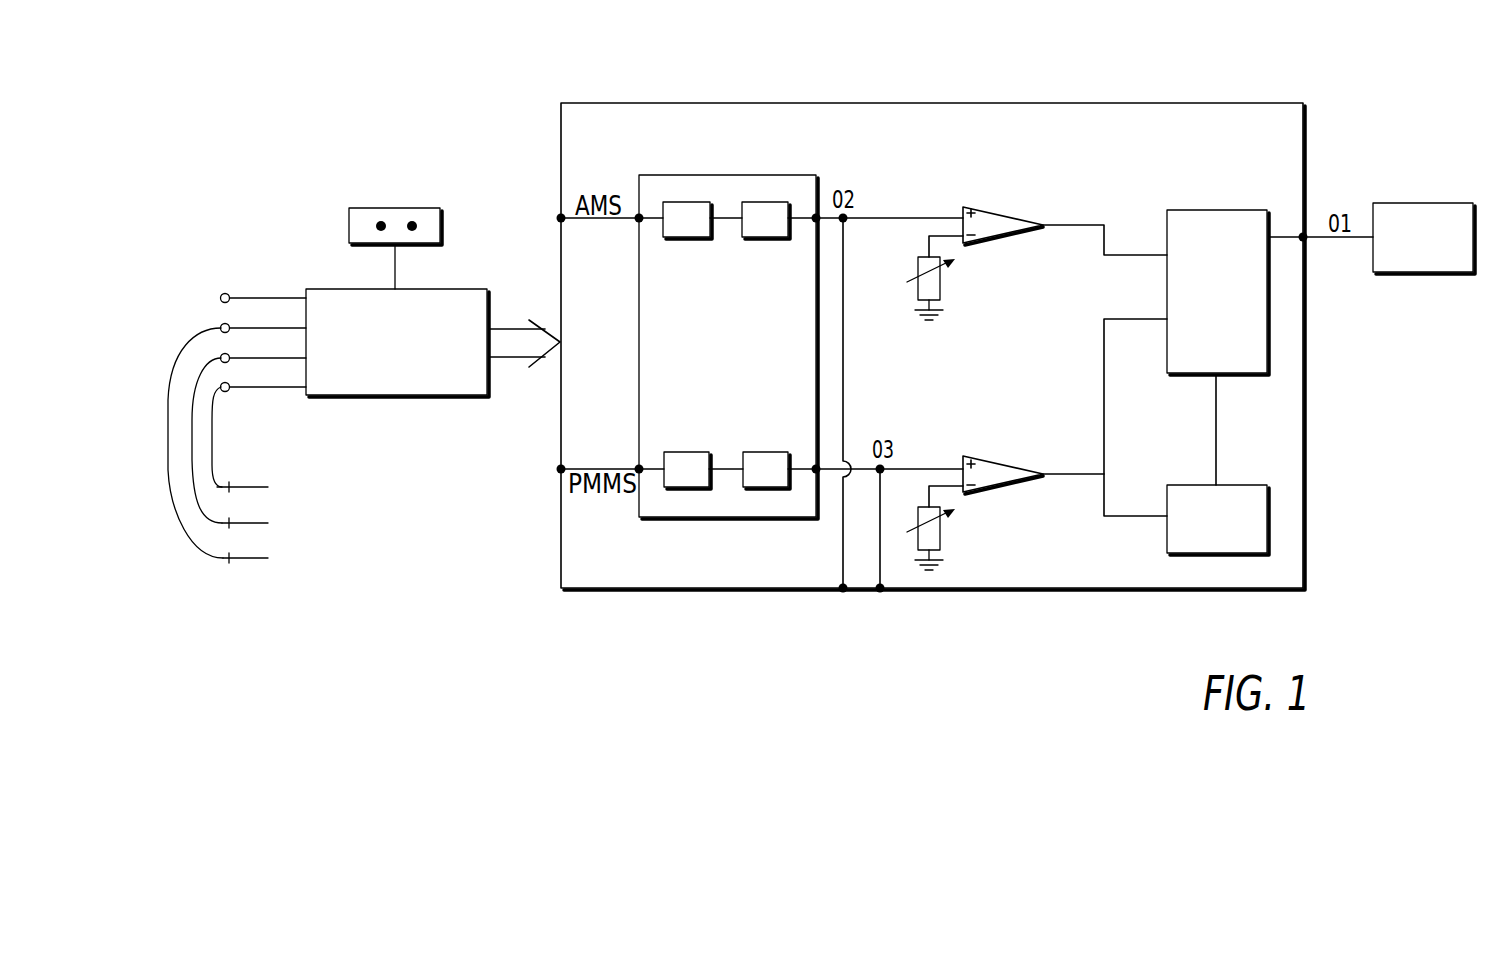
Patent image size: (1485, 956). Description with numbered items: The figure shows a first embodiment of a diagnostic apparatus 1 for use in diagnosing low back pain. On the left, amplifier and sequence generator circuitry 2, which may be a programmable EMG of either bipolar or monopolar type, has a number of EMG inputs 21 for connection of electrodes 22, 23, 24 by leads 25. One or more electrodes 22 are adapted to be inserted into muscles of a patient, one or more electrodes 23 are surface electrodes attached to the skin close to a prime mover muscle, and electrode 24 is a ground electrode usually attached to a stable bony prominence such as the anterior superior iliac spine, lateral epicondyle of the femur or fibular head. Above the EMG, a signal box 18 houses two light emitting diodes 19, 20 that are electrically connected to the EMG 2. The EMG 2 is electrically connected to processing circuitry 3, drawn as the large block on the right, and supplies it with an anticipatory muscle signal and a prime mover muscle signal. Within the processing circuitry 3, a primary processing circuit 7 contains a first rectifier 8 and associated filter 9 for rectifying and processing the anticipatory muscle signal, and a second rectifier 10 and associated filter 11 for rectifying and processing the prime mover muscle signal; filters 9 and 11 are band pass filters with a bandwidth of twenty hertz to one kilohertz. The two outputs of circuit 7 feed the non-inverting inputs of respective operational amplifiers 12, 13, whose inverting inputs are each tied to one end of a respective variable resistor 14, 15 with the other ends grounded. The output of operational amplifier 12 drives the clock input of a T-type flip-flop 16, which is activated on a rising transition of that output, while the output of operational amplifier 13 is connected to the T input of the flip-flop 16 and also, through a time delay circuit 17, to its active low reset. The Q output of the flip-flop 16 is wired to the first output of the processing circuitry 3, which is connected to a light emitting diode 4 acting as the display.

The diagnostic apparatus 1 is at (1290, 72).
The amplifier and sequence generator circuitry 2 is at (353, 397).
The processing circuitry 3 is at (1322, 156).
The light emitting diode 4 is at (1420, 203).
The primary processing circuit 7 is at (728, 319).
The first rectifier 8 is at (687, 220).
The filter 9 is at (766, 220).
The second rectifier 10 is at (687, 470).
The filter 11 is at (766, 470).
The operational amplifier 12 is at (990, 210).
The operational amplifier 13 is at (990, 460).
The variable resistor 14 is at (942, 278).
The variable resistor 15 is at (942, 528).
The T-type flip-flop 16 is at (1197, 210).
The time delay circuit 17 is at (1202, 555).
The signal box 18 is at (343, 215).
The light emitting diode 19 is at (379, 223).
The light emitting diode 20 is at (412, 223).
The EMG inputs 21 is at (223, 325).
The electrode 22 is at (268, 487).
The electrode 23 is at (268, 523).
The ground electrode 24 is at (268, 558).
The leads 25 is at (212, 480).